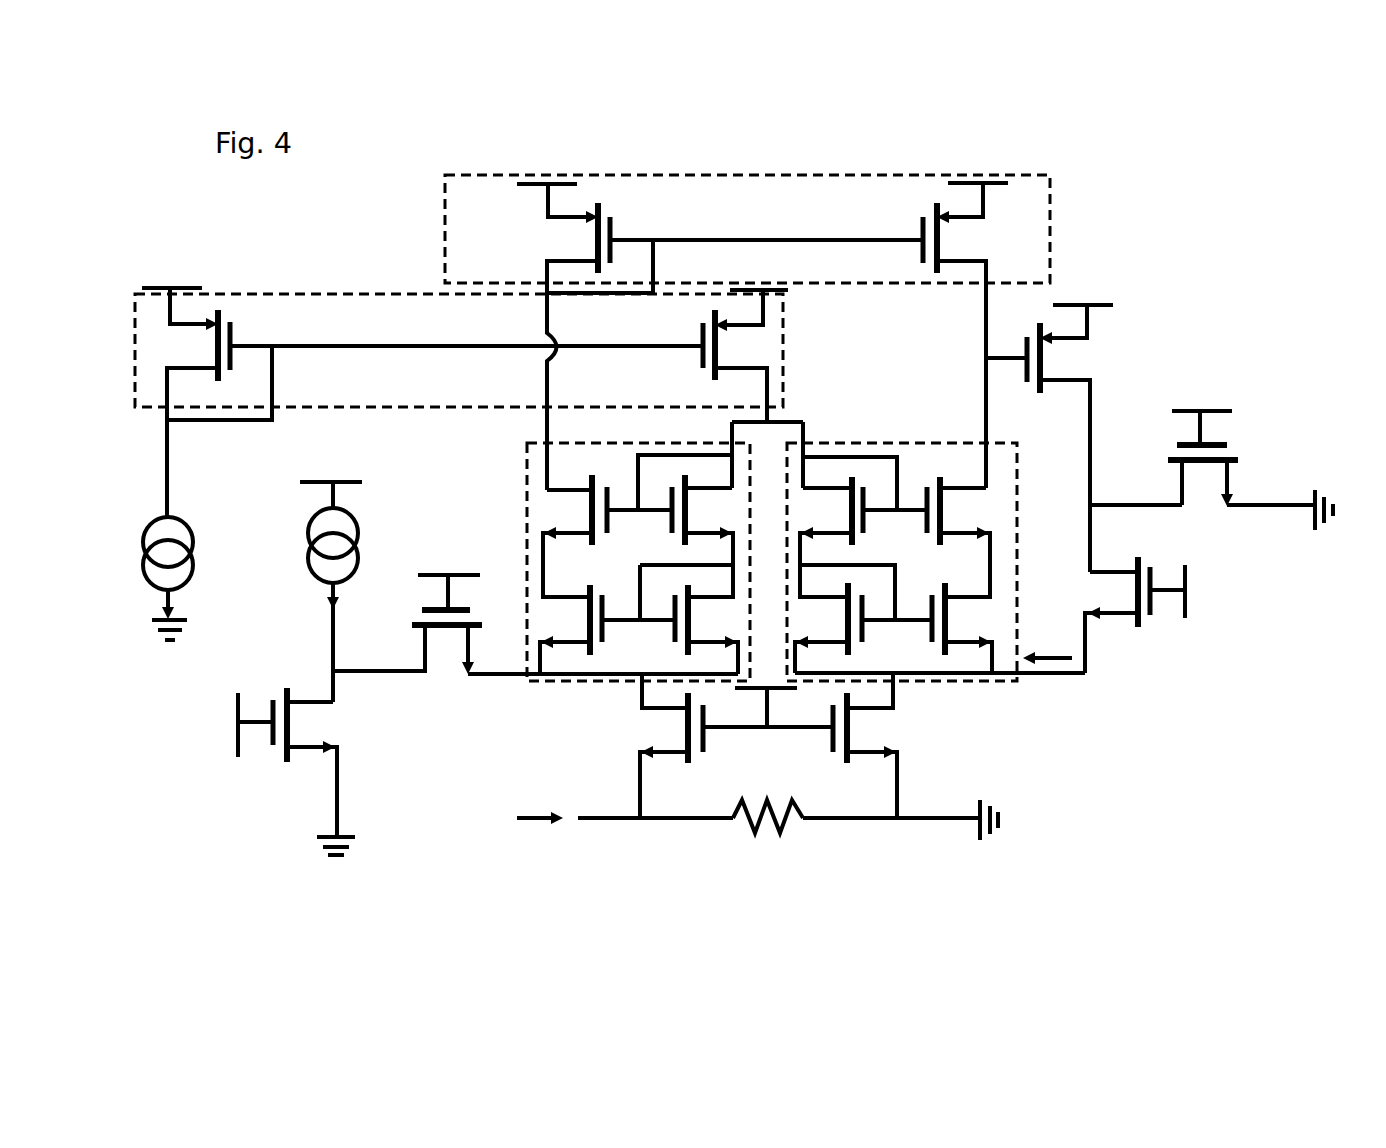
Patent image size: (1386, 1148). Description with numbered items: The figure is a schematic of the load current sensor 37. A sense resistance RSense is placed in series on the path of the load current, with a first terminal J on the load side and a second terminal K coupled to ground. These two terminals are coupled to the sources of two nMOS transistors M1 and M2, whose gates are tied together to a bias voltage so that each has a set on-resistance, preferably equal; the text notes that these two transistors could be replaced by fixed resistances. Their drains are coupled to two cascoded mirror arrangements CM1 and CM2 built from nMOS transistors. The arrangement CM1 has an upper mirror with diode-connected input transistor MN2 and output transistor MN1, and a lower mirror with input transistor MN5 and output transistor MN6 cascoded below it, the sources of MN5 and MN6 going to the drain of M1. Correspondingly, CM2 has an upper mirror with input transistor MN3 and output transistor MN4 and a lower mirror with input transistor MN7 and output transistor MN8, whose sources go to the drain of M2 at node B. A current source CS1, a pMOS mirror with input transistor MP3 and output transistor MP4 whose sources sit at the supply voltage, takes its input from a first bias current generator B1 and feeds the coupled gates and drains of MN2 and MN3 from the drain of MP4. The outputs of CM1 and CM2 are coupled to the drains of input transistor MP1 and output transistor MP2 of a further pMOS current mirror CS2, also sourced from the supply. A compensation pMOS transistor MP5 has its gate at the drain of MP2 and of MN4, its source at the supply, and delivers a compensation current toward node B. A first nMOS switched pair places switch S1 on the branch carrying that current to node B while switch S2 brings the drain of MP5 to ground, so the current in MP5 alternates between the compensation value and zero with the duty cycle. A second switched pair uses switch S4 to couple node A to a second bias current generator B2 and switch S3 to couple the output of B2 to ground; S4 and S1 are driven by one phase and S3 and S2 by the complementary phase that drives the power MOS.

The load current sensor 37 is at (1109, 229).
The current source CS1 is at (387, 293).
The further pMOS current mirror CS2 is at (758, 168).
The cascoded mirror arrangement CM1 is at (525, 508).
The cascoded mirror arrangement CM2 is at (1018, 500).
The input transistor MP1 is at (580, 320).
The output transistor MP2 is at (968, 319).
The pMOS input transistor MP3 is at (207, 387).
The pMOS output transistor MP4 is at (753, 374).
The compensation pMOS transistor MP5 is at (1084, 422).
The output transistor MN1 is at (572, 536).
The input transistor MN2 is at (691, 537).
The input transistor MN3 is at (843, 538).
The output transistor MN4 is at (968, 537).
The input transistor MN5 is at (567, 629).
The output transistor MN6 is at (710, 629).
The input transistor MN7 is at (827, 628).
The output transistor MN8 is at (967, 628).
The nMOS M1 is at (652, 755).
The nMOS M2 is at (884, 755).
The first switch S1 is at (1137, 615).
The second switch S2 is at (1250, 462).
The second switch S3 is at (285, 771).
The first switch S4 is at (430, 630).
The first bias current generator B1 is at (189, 566).
The second bias current generator B2 is at (307, 576).
The sense resistance RSense is at (769, 798).